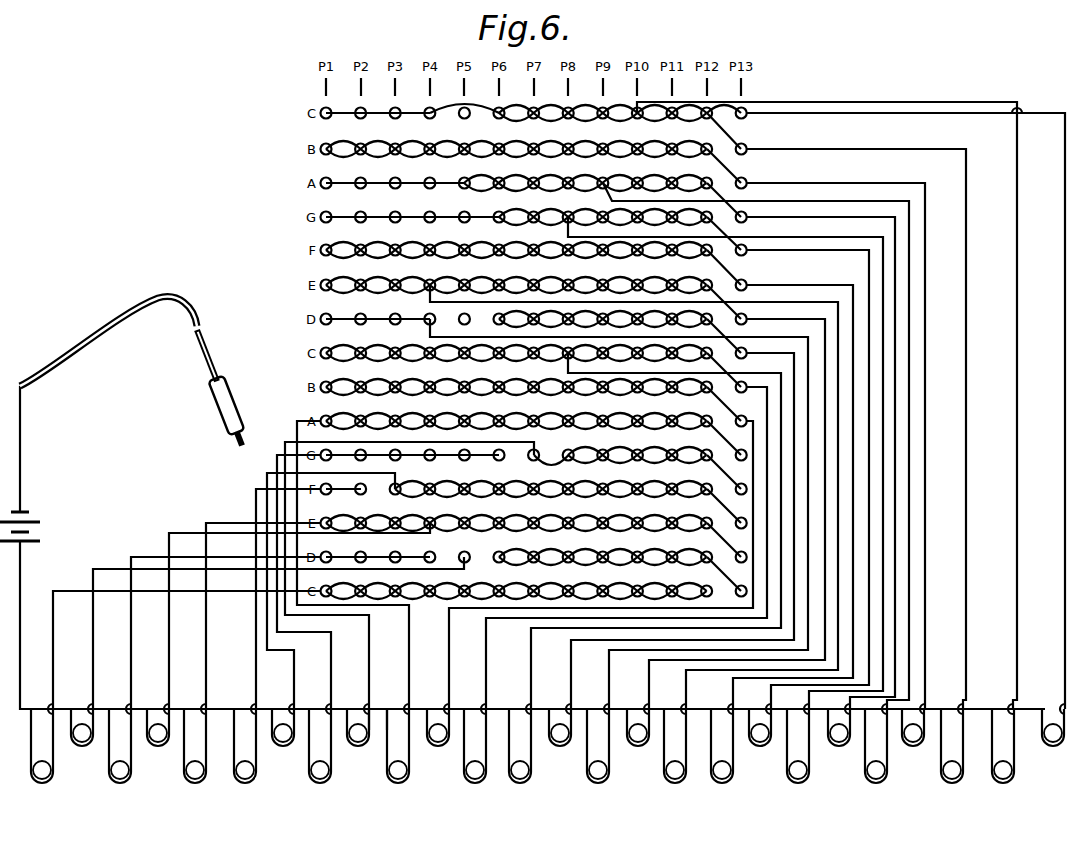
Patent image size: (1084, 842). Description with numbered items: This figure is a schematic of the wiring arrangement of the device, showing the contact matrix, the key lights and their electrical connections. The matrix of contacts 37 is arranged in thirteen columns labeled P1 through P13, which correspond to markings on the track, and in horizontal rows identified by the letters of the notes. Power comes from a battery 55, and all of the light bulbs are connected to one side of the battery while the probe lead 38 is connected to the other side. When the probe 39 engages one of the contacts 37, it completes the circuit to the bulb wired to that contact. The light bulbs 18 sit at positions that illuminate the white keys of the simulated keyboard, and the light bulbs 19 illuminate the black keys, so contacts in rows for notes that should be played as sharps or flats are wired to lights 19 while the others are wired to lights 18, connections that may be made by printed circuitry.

The contacts 37 is at (322, 248).
The probe lead 38 is at (100, 345).
The probe 39 is at (232, 408).
The battery 55 is at (36, 533).
The light bulbs 18 is at (250, 772).
The light bulbs 19 is at (399, 720).